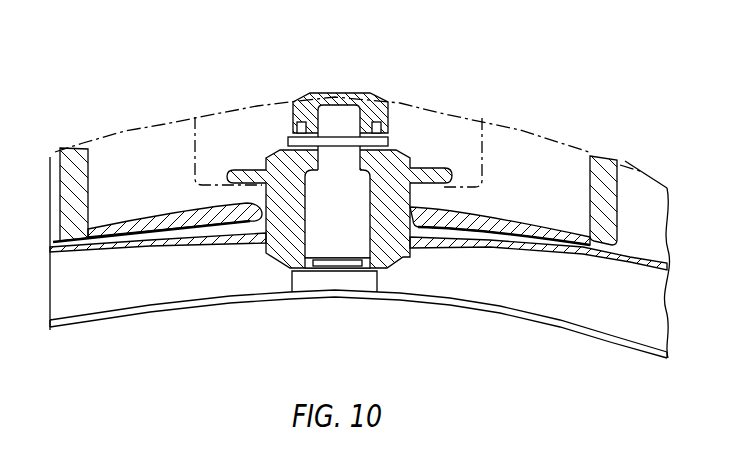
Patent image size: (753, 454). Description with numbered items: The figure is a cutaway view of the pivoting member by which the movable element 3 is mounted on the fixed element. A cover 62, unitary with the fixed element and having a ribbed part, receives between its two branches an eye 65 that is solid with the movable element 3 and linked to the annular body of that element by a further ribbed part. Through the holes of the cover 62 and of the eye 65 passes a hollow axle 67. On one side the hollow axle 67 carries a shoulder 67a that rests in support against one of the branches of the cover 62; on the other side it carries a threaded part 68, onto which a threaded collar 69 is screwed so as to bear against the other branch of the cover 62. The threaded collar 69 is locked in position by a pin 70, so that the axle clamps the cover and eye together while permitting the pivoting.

The movable element 3 is at (600, 168).
The cover 62 is at (278, 170).
The eye 65 is at (413, 205).
The hollow axle 67 is at (295, 256).
The shoulder 67a is at (375, 257).
The threaded part 68 is at (372, 98).
The threaded collar 69 is at (380, 123).
The pin 70 is at (303, 142).